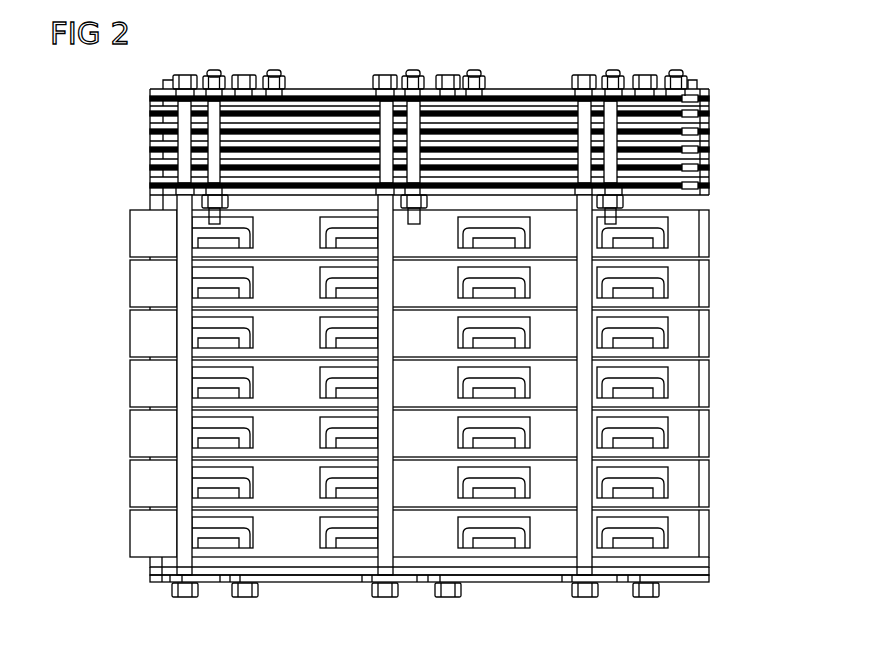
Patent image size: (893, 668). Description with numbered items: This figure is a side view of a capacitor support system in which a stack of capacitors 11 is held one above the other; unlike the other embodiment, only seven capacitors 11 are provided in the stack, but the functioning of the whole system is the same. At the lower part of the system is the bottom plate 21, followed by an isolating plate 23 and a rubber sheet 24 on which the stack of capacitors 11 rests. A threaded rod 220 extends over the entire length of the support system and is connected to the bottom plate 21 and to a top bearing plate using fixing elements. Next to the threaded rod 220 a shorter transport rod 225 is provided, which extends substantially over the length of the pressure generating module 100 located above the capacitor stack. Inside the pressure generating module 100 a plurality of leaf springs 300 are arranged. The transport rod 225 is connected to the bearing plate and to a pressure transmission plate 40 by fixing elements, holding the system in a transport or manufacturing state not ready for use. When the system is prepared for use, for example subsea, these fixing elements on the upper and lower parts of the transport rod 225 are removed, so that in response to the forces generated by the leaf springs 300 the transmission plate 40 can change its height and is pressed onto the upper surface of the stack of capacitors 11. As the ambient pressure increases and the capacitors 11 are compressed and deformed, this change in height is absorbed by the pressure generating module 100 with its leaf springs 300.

The pressure generating module 100 is at (101, 90).
The threaded rod 220 is at (178, 143).
The transport rod 225 is at (610, 150).
The leaf springs 300 is at (698, 107).
The pressure transmission plate 40 is at (695, 190).
The capacitors 11 is at (700, 532).
The rubber sheet 24 is at (700, 562).
The isolating plate 23 is at (700, 571).
The bottom plate 21 is at (683, 585).